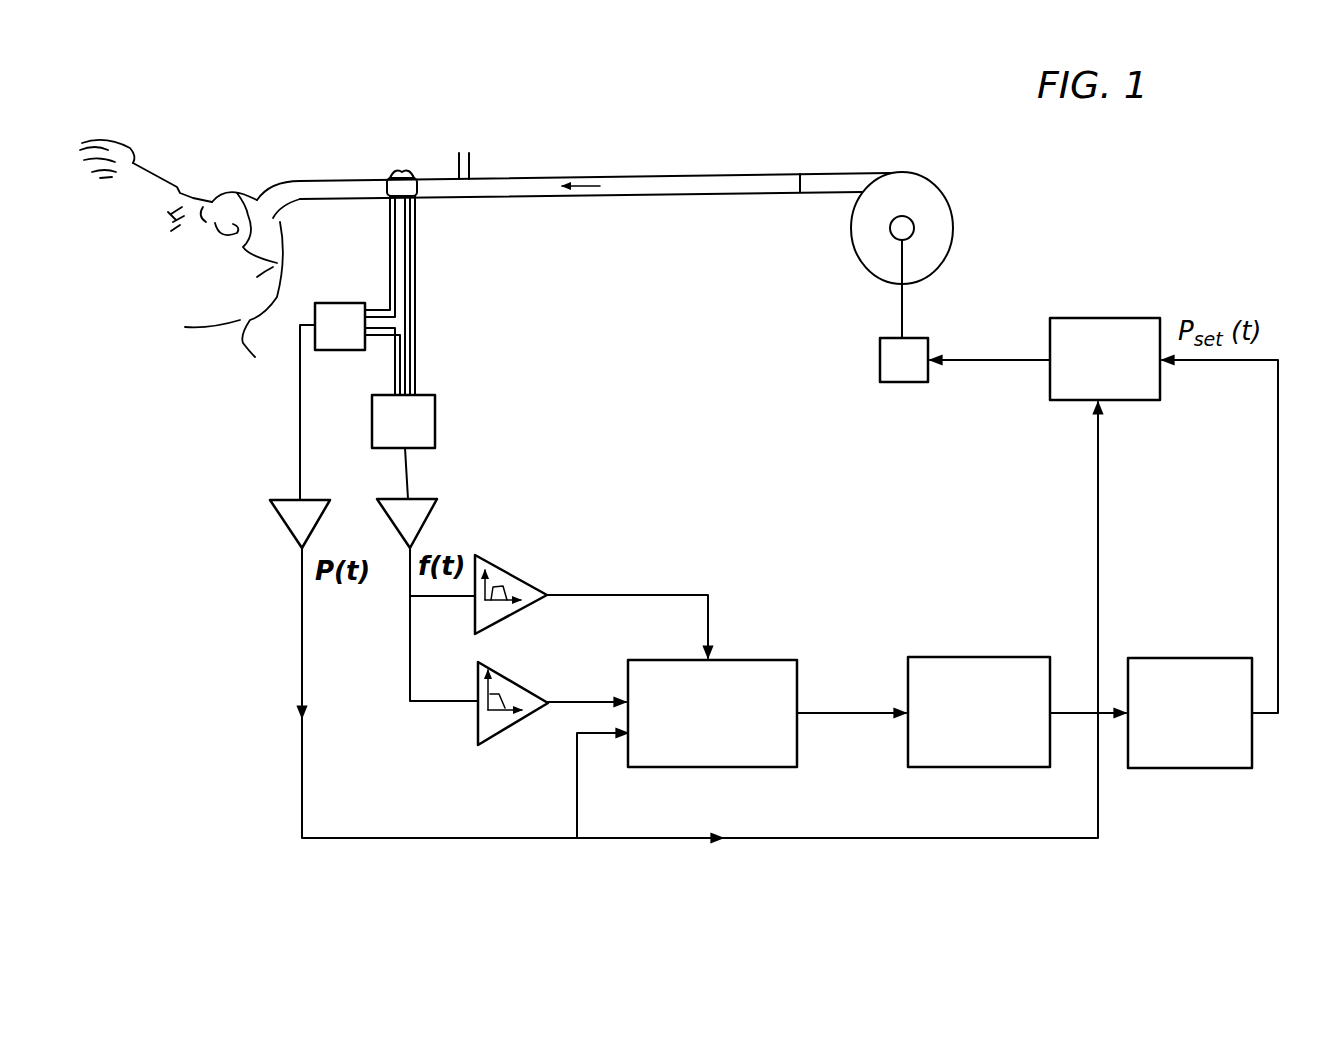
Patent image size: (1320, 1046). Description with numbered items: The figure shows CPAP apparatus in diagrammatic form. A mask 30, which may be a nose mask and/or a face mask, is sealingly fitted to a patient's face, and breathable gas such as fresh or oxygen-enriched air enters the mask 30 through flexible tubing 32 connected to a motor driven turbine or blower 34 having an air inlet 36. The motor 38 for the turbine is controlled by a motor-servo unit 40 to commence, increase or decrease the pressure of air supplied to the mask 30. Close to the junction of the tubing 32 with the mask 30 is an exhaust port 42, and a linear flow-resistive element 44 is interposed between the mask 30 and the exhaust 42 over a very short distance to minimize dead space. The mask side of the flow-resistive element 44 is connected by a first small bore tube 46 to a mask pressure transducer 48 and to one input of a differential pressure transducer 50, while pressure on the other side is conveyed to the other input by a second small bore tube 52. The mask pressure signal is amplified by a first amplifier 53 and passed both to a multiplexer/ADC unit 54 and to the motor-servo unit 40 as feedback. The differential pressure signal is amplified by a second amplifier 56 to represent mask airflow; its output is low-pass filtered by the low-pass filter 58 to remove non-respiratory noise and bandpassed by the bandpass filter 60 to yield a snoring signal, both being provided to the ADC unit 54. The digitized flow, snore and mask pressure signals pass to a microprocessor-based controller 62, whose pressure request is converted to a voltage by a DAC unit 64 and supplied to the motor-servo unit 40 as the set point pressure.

The mask 30 is at (257, 198).
The flexible tubing 32 is at (695, 181).
The motor driven turbine or blower 34 is at (920, 172).
The air inlet 36 is at (914, 228).
The motor 38 is at (917, 340).
The motor-servo unit 40 is at (1127, 330).
The exhaust port 42 is at (471, 162).
The linear flow-resistive element 44 is at (400, 173).
The first small bore tube 46 is at (395, 281).
The mask pressure transducer 48 is at (333, 344).
The differential pressure transducer 50 is at (428, 407).
The second small bore tube 52 is at (413, 322).
The first amplifier 53 is at (280, 512).
The multiplexer/ADC unit 54 is at (740, 668).
The second amplifier 56 is at (420, 508).
The low-pass filter 58 is at (513, 688).
The bandpass filter 60 is at (520, 582).
The controller 62 is at (930, 668).
The DAC unit 64 is at (1147, 665).